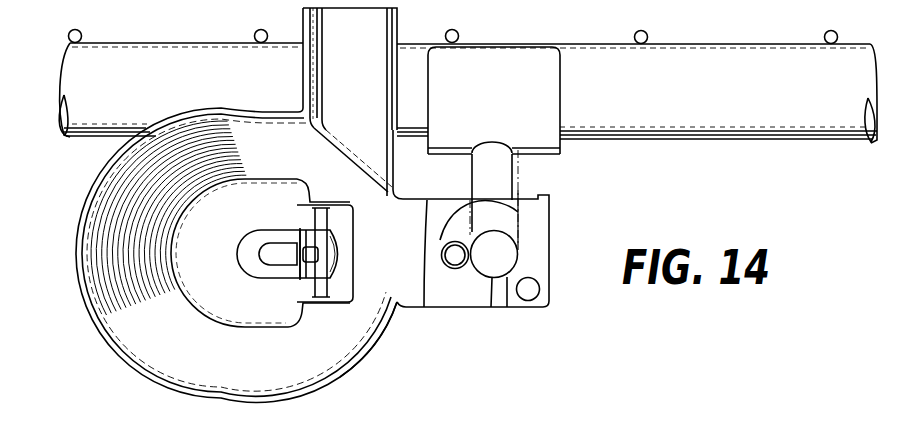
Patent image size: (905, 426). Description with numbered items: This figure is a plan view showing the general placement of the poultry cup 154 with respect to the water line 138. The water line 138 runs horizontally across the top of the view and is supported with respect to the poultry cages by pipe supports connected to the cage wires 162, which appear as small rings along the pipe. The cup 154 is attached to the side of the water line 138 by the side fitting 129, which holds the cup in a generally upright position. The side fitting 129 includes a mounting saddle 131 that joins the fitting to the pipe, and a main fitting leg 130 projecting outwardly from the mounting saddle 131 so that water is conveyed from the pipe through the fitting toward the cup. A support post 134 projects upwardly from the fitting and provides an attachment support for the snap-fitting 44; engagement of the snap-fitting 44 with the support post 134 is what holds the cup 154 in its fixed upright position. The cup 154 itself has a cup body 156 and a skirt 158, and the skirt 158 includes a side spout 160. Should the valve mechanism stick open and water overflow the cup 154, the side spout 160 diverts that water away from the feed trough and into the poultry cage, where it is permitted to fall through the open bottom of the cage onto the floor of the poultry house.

The snap-fitting 44 is at (552, 222).
The side fitting 129 is at (526, 179).
The main fitting leg 130 is at (472, 183).
The mounting saddle 131 is at (561, 150).
The support post 134 is at (491, 283).
The water line 138 is at (716, 140).
The poultry cup 154 is at (386, 327).
The cup body 156 is at (260, 253).
The skirt 158 is at (124, 290).
The side spout 160 is at (398, 18).
The cage wires 162 is at (257, 30).